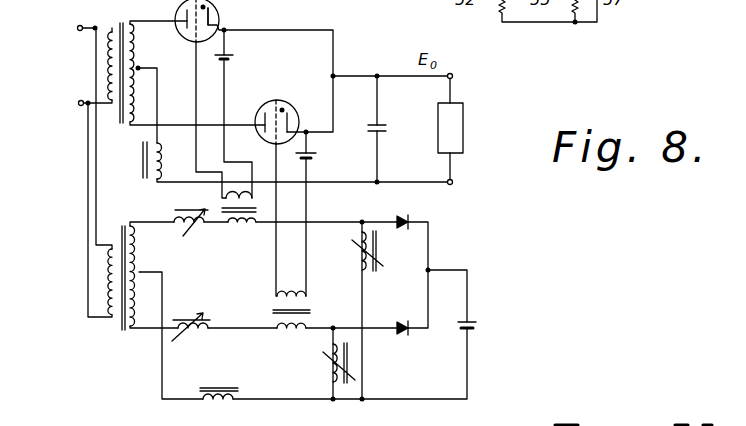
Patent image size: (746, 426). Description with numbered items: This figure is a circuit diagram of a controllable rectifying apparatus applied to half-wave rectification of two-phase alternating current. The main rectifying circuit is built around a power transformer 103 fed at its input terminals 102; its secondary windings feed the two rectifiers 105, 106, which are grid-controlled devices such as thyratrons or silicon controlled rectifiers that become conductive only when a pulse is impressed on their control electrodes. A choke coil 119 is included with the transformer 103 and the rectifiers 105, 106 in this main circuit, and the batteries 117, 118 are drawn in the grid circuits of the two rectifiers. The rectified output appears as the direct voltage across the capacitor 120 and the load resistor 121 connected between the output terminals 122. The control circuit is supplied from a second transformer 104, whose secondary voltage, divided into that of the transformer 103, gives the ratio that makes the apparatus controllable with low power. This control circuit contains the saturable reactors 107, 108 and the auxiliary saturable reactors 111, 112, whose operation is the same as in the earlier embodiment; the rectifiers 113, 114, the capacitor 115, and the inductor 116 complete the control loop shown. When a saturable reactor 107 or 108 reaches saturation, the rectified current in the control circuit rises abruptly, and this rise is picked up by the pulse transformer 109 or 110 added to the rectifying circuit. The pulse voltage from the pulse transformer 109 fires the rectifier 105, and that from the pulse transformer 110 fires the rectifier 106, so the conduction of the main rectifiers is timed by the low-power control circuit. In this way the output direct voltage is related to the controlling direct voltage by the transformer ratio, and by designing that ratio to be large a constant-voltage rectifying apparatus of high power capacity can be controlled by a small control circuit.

The input terminals 102 is at (70, 65).
The transformer 103 is at (120, 22).
The transformer 104 is at (124, 225).
The rectifier 105 is at (205, 6).
The rectifier 106 is at (298, 96).
The saturable reactor 107 is at (197, 229).
The saturable reactor 108 is at (199, 315).
The pulse transformer 109 is at (257, 222).
The pulse transformer 110 is at (274, 310).
The auxiliary saturable reactor 111 is at (355, 242).
The auxiliary saturable reactor 112 is at (320, 360).
The rectifier diode 113 is at (401, 214).
The rectifier diode 114 is at (398, 319).
The capacitor 115 is at (478, 320).
The inductor 116 is at (223, 387).
The battery 117 is at (233, 54).
The battery 118 is at (317, 154).
The choke coil 119 is at (143, 168).
The capacitor 120 is at (383, 123).
The load resistor 121 is at (464, 130).
The output terminals 122 is at (469, 127).